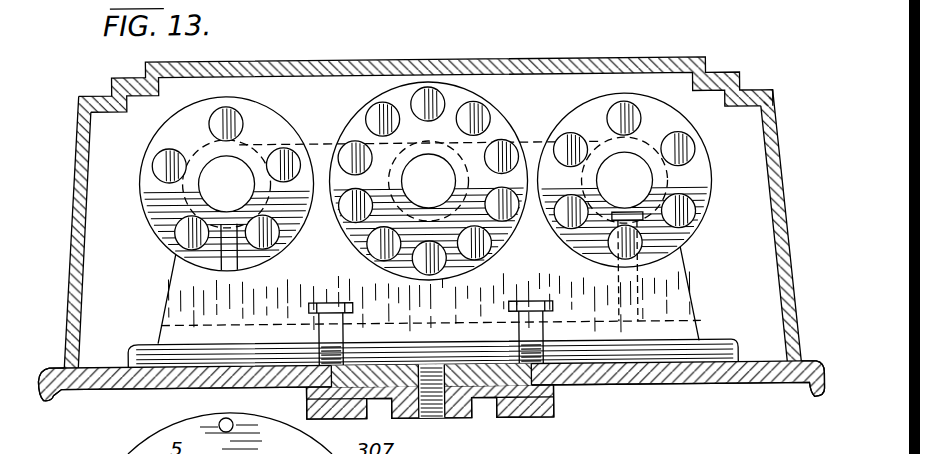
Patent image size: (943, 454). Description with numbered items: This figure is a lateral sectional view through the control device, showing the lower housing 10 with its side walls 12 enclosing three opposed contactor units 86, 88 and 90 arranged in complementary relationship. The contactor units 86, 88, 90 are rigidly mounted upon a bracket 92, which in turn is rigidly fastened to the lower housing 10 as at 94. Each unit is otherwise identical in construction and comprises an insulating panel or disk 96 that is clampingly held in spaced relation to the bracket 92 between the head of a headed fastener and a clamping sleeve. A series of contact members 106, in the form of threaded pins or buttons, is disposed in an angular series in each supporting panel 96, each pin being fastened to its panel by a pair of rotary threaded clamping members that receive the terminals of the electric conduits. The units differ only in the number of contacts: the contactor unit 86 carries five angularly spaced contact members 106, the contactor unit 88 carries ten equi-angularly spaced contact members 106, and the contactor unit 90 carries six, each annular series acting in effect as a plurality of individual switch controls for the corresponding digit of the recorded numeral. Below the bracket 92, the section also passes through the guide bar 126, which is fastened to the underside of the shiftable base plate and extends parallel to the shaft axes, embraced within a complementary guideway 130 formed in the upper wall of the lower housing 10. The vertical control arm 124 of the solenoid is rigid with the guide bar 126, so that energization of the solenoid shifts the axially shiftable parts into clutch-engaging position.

The lower housing 10 is at (741, 382).
The casing side walls 12 is at (81, 102).
The contactor unit 86 is at (273, 137).
The contactor unit 88 is at (397, 104).
The contactor unit 90 is at (660, 89).
The bracket 92 is at (672, 283).
The fastening 94 is at (325, 302).
The insulating panel or disk 96 is at (258, 108).
The contact members 106 is at (187, 230).
The vertical control arm 124 is at (464, 418).
The guide bar 126 is at (553, 392).
The guideway 130 is at (306, 399).